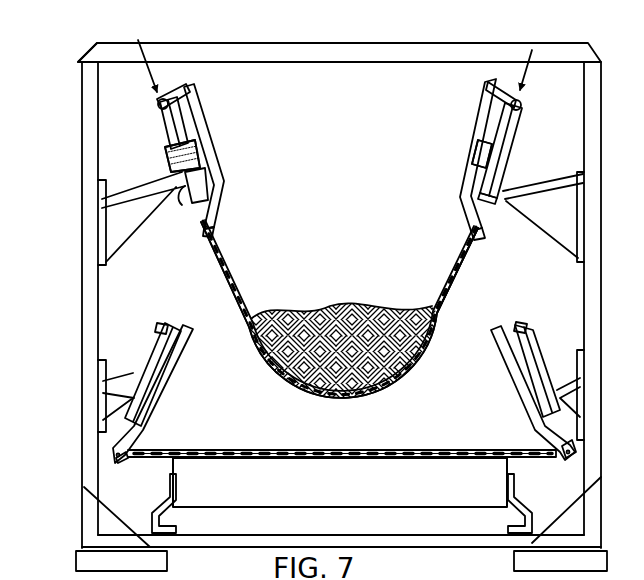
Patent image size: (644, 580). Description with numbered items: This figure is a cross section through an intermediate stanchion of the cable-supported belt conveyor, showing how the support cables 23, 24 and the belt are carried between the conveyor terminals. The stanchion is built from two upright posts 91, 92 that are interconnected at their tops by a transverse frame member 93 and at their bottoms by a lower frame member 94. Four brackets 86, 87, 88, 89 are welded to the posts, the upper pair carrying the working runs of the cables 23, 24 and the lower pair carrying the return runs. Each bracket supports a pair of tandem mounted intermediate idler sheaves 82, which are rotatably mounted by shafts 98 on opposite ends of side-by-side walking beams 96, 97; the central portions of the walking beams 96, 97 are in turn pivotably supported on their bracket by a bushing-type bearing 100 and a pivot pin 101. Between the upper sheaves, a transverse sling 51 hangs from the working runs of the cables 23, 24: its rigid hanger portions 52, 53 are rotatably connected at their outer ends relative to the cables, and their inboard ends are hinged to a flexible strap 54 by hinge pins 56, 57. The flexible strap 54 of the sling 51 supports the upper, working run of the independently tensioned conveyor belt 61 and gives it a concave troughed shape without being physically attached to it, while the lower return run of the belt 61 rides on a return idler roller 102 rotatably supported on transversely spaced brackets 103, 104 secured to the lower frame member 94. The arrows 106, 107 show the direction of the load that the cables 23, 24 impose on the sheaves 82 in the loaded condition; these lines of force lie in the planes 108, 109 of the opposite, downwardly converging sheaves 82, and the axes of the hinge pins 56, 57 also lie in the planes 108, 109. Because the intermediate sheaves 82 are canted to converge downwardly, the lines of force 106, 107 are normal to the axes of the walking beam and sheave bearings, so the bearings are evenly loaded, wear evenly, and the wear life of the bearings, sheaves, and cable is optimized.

The support cable 23 is at (521, 105).
The support cable 24 is at (158, 104).
The transverse sling 51 is at (230, 272).
The hanger portion 52 is at (482, 113).
The hanger portion 53 is at (200, 117).
The flexible strap 54 is at (310, 449).
The hinge pin 56 is at (477, 230).
The hinge pin 57 is at (212, 227).
The conveyor belt 61 is at (263, 462).
The idler sheave 82 is at (213, 193).
The bracket 86 is at (538, 190).
The bracket 87 is at (125, 200).
The bracket 88 is at (110, 388).
The bracket 89 is at (582, 388).
The upright post 91 is at (590, 297).
The upright post 92 is at (86, 297).
The transverse frame member 93 is at (314, 73).
The lower frame member 94 is at (442, 540).
The walking beam 96 is at (165, 150).
The walking beam 97 is at (196, 160).
The shaft 98 is at (482, 155).
The bushing-type bearing 100 is at (182, 187).
The pivot pin 101 is at (190, 150).
The return idler roller 102 is at (406, 488).
The bracket 103 is at (529, 503).
The bracket 104 is at (154, 500).
The arrow 106 is at (530, 80).
The arrow 107 is at (147, 74).
The plane 108 is at (427, 366).
The plane 109 is at (262, 368).